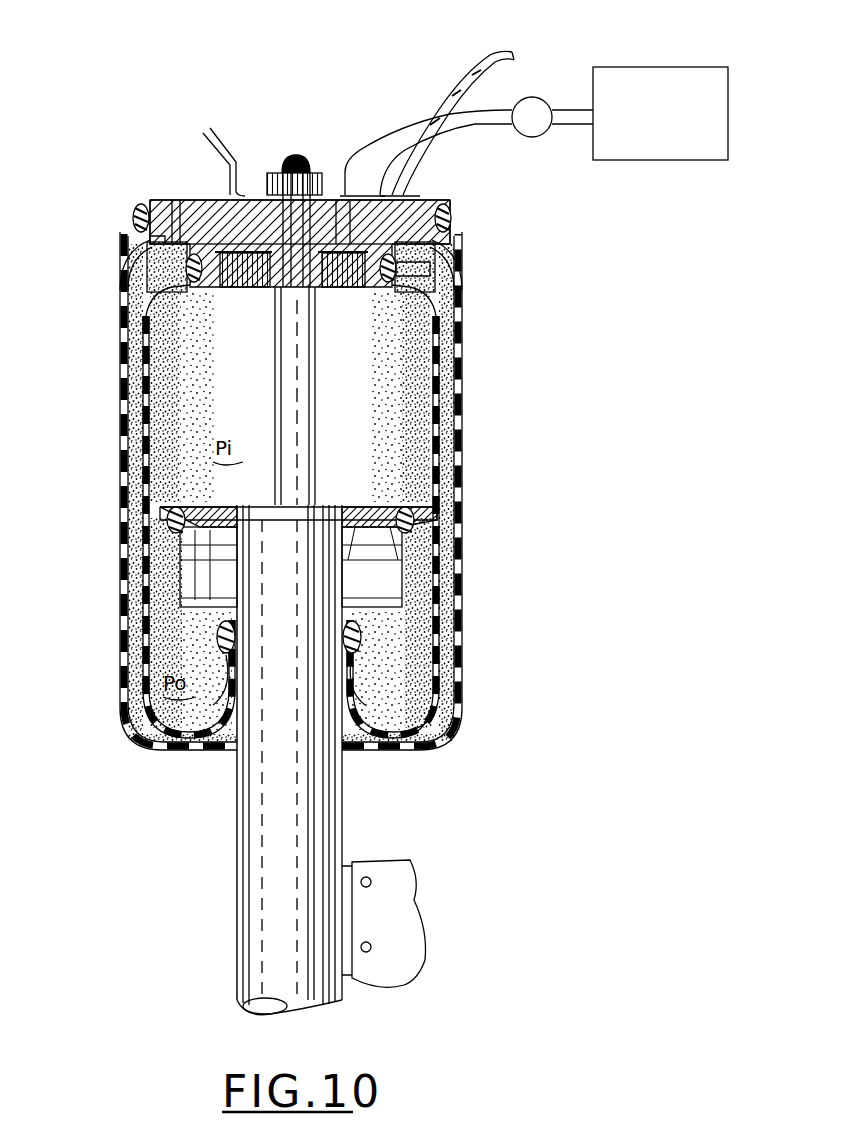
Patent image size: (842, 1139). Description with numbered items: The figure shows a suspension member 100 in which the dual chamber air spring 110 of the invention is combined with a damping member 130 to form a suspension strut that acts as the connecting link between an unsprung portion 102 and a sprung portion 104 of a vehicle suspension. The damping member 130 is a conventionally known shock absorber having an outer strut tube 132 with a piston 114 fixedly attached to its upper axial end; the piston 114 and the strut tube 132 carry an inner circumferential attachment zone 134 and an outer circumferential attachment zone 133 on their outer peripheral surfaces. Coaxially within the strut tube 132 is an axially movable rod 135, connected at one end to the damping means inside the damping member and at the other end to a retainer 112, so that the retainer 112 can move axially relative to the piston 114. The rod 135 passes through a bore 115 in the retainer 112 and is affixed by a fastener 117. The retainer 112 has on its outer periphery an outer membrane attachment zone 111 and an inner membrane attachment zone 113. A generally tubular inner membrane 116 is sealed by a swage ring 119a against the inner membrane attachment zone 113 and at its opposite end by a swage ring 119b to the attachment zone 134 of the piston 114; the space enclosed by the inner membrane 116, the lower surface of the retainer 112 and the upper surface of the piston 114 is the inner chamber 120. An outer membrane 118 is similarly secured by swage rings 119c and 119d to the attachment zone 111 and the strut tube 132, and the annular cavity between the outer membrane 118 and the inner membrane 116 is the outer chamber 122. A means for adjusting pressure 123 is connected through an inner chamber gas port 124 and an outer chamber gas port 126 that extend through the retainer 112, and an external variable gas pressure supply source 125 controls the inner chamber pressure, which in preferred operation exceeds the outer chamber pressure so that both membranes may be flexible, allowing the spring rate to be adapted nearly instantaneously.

The suspension member 100 is at (420, 58).
The unsprung portion 102 is at (218, 146).
The sprung portion 104 is at (404, 977).
The air spring 110 is at (120, 478).
The outer membrane attachment zone 111 is at (446, 200).
The retainer 112 is at (172, 200).
The inner membrane attachment zone 113 is at (404, 275).
The piston 114 is at (291, 567).
The bore 115 is at (240, 216).
The inner membrane 116 is at (165, 292).
The fastener 117 is at (334, 186).
The outer membrane 118 is at (127, 342).
The swage ring 119a is at (440, 258).
The swage ring 119b is at (418, 523).
The swage ring 119c is at (136, 210).
The swage ring 119d is at (366, 650).
The inner chamber 120 is at (167, 397).
The outer chamber 122 is at (135, 720).
The means for adjusting pressure 123 is at (540, 98).
The inner chamber gas port 124 is at (413, 197).
The variable gas pressure supply source 125 is at (688, 77).
The outer chamber gas port 126 is at (164, 204).
The damping member 130 is at (236, 834).
The outer strut tube 132 is at (338, 800).
The outer circumferential attachment zone 133 is at (390, 506).
The inner circumferential attachment zone 134 is at (362, 633).
The rod 135 is at (317, 413).